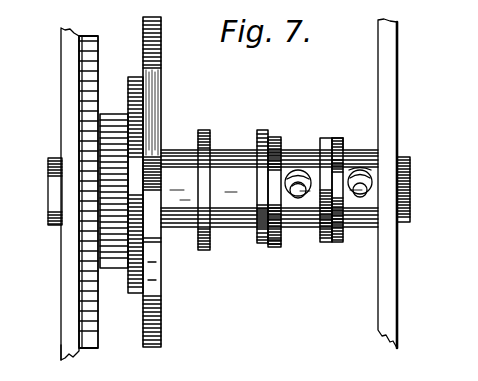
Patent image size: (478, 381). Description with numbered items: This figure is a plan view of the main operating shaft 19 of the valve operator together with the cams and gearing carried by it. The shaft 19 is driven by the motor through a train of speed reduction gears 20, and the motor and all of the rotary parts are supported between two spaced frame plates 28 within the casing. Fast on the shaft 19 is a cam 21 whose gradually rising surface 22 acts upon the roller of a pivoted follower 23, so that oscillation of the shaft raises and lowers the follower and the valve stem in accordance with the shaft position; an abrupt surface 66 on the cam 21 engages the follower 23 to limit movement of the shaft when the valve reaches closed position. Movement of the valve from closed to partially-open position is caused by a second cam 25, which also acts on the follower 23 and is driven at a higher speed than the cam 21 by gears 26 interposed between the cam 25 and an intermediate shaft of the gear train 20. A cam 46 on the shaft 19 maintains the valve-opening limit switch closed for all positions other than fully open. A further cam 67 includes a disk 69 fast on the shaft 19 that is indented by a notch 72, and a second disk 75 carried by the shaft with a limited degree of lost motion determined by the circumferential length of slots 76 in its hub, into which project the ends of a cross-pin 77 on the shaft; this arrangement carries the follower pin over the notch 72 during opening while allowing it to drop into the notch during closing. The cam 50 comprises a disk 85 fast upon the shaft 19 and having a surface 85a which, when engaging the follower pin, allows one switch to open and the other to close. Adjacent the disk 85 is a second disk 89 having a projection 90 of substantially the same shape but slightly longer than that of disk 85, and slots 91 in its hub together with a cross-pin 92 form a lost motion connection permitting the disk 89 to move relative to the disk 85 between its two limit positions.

The main operating shaft 19 is at (362, 165).
The train of speed reduction gears 20 is at (104, 293).
The cam 21 is at (155, 123).
The gradually rising surface 22 is at (163, 322).
The follower 23 is at (37, 363).
The cam 25 is at (128, 88).
The gears 26 is at (100, 226).
The frame plates 28 is at (70, 312).
The cam 46 is at (212, 132).
The cam 50 is at (335, 136).
The abrupt surface 66 is at (152, 155).
The cam 67 is at (269, 129).
The disk 69 is at (263, 250).
The notch 72 is at (262, 197).
The second disk 75 is at (276, 248).
The slots 76 is at (297, 170).
The cross-pin 77 is at (298, 194).
The disk 85 is at (331, 244).
The surface 85a is at (325, 156).
The second disk 89 is at (343, 141).
The projection 90 is at (342, 208).
The slots 91 is at (356, 180).
The cross-pin 92 is at (362, 192).